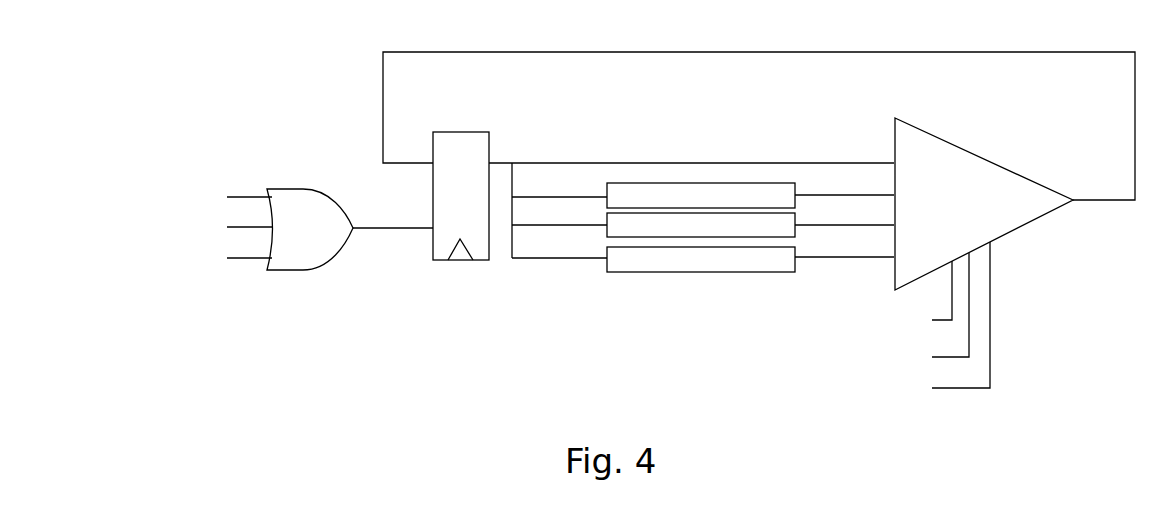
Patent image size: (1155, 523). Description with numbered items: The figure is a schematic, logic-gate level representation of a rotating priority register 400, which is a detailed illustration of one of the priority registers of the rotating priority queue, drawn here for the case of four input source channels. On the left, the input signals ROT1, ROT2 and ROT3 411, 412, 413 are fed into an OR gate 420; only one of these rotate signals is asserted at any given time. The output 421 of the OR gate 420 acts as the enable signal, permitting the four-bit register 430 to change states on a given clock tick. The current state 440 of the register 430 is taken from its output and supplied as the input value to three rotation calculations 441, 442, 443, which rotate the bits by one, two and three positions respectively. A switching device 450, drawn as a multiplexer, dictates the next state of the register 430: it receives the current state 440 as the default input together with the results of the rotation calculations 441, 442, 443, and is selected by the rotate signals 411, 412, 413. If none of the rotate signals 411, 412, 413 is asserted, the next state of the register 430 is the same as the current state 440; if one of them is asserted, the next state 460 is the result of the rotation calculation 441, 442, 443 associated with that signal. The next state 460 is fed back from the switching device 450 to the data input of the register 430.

The rotating priority register 400 is at (227, 128).
The input signal ROT1 411 is at (158, 192).
The input signal ROT2 412 is at (158, 220).
The input signal ROT3 413 is at (157, 242).
The OR gate 420 is at (328, 260).
The output of OR gate 421 is at (380, 235).
The 4-bit register 430 is at (480, 130).
The current state 440 is at (532, 162).
The rotation calculation (rotate bits by 1) 441 is at (817, 192).
The rotation calculation (rotate bits by 2) 442 is at (817, 222).
The rotation calculation (rotate bits by 3) 443 is at (817, 255).
The switching device 450 is at (967, 153).
The next state 460 is at (1018, 48).